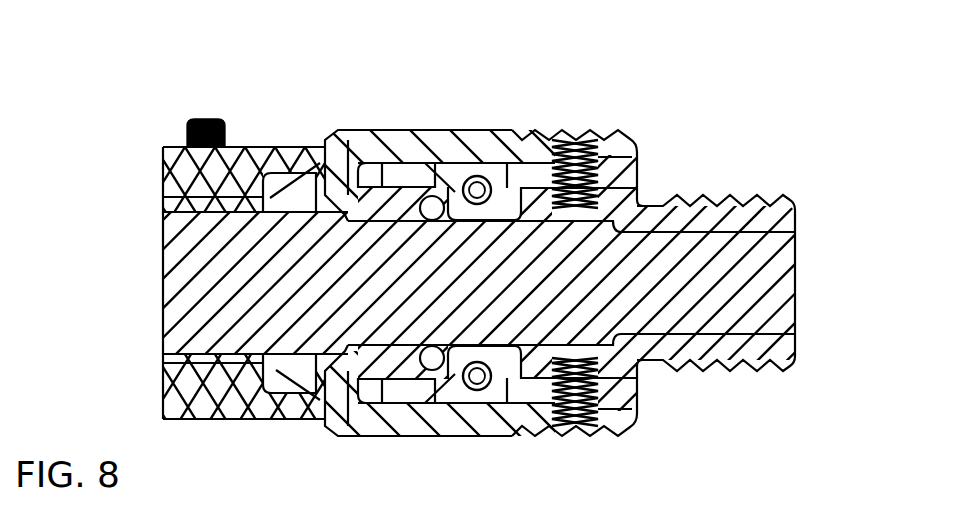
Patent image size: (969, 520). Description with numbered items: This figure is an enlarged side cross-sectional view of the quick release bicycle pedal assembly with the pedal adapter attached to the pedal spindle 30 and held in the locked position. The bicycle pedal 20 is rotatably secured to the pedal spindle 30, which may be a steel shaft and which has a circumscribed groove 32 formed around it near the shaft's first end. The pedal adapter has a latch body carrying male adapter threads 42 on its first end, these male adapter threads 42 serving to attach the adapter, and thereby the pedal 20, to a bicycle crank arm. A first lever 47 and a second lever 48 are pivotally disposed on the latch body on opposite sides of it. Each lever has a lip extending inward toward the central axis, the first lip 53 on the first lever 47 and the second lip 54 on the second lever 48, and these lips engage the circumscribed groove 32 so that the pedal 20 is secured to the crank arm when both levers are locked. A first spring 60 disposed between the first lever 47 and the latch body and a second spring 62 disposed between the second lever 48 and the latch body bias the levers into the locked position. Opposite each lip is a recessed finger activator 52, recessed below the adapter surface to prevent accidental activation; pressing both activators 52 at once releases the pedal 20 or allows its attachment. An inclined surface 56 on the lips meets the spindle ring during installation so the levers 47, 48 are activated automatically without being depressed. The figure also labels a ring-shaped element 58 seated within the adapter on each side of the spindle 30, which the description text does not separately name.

The bicycle pedal 20 is at (175, 146).
The pedal spindle 30 is at (755, 267).
The circumscribed groove 32 is at (350, 210).
The male adapter threads 42 is at (692, 196).
The first lever 47 is at (362, 436).
The second lever 48 is at (405, 130).
The recessed finger activator 52 is at (579, 138).
The first lip 53 is at (345, 372).
The second lip 54 is at (347, 177).
The inclined surface 56 is at (340, 160).
The O-ring 58 is at (467, 174).
The first spring 60 is at (552, 426).
The second spring 62 is at (550, 133).